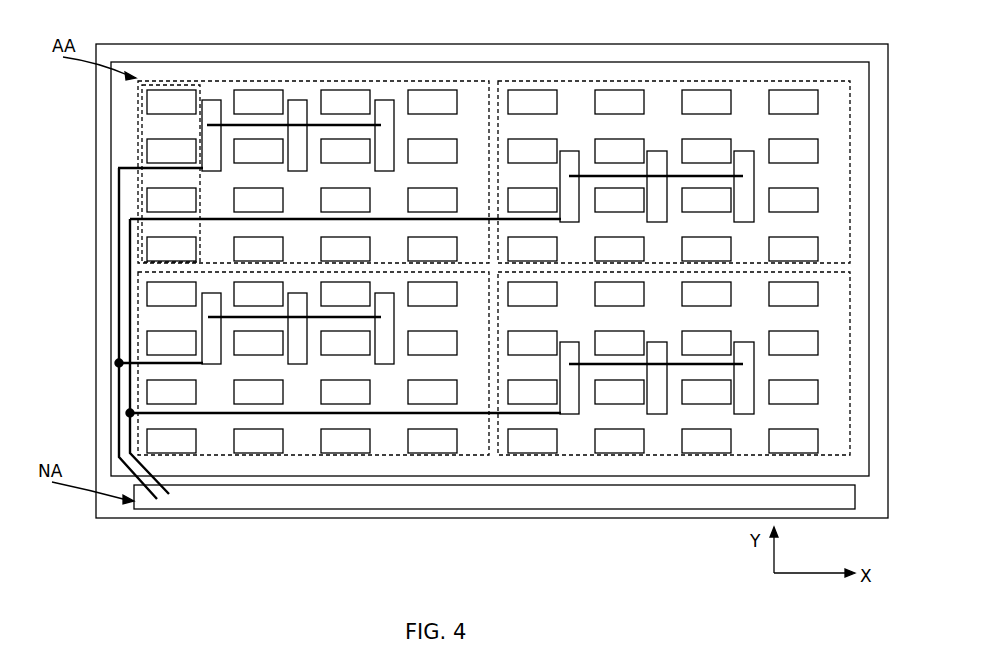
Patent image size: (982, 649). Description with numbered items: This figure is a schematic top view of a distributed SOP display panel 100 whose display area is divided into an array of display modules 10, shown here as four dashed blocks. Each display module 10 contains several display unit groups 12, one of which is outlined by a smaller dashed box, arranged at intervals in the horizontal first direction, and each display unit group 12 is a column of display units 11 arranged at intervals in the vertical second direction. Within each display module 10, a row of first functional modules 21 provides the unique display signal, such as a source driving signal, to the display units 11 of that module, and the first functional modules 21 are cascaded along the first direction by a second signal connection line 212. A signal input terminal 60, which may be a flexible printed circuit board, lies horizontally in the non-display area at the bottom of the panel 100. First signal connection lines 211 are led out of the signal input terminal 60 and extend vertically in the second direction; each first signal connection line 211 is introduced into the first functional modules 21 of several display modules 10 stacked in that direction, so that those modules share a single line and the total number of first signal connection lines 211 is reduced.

The distributed SOP display panel 100 is at (526, 44).
The display module 10 is at (237, 80).
The display unit group 12 is at (168, 85).
The display unit 11 is at (440, 99).
The first functional module 21 is at (295, 112).
The first signal connection line 211 is at (130, 318).
The second signal connection line 212 is at (586, 365).
The signal input terminal 60 is at (430, 499).